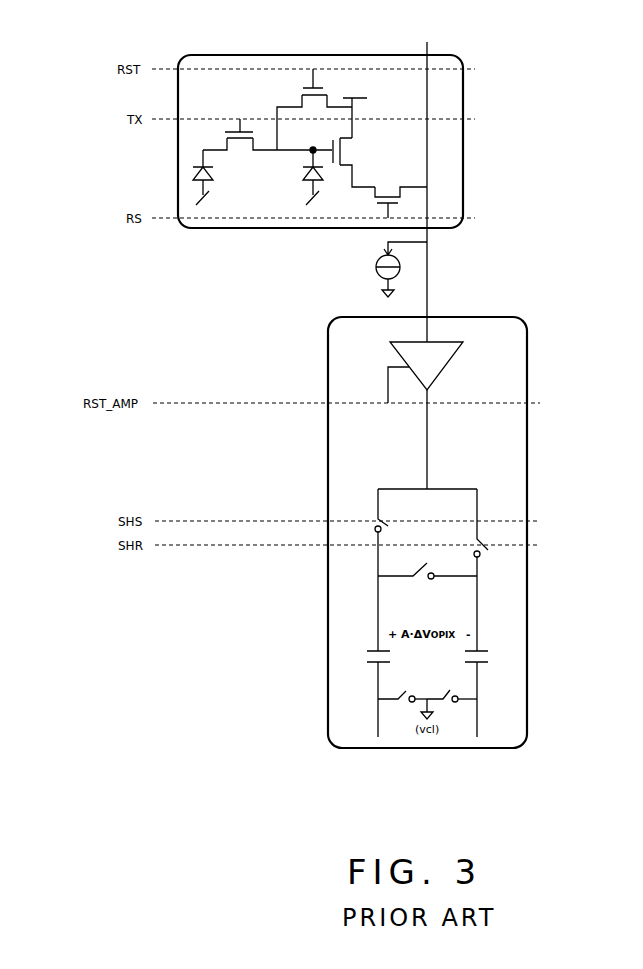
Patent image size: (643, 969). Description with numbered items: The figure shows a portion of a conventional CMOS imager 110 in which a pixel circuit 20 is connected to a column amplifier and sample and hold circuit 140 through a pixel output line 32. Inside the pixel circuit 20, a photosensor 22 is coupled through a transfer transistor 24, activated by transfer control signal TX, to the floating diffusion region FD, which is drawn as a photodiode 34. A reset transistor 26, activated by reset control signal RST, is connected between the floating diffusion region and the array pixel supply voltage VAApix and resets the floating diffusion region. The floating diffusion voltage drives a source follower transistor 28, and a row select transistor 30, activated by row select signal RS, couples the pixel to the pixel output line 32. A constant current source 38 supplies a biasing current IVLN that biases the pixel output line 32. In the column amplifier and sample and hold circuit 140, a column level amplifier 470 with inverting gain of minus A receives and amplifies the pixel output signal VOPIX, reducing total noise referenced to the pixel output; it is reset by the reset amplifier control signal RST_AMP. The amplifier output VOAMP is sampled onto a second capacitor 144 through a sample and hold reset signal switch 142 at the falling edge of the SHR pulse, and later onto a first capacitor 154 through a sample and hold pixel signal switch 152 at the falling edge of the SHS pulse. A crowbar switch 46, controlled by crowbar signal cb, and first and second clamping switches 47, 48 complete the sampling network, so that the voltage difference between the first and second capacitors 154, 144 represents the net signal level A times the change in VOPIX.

The pixel circuit 20 is at (238, 232).
The photosensor 22 is at (195, 176).
The transfer transistor 24 is at (228, 138).
The reset transistor 26 is at (309, 93).
The source follower transistor 28 is at (352, 141).
The row select transistor 30 is at (377, 186).
The pixel output line 32 is at (433, 273).
The floating diffusion region photodiode 34 is at (311, 174).
The constant current source 38 is at (378, 276).
The CMOS imager 110 is at (547, 240).
The column amplifier and sample and hold circuit 140 is at (328, 746).
The sample and hold reset signal switch 142 is at (477, 540).
The second capacitor 144 is at (482, 665).
The sample and hold pixel signal switch 152 is at (378, 515).
The first capacitor 154 is at (373, 666).
The crowbar switch 46 is at (414, 576).
The first clamping switch 47 is at (399, 693).
The second clamping switch 48 is at (447, 689).
The column level amplifier 470 is at (445, 369).